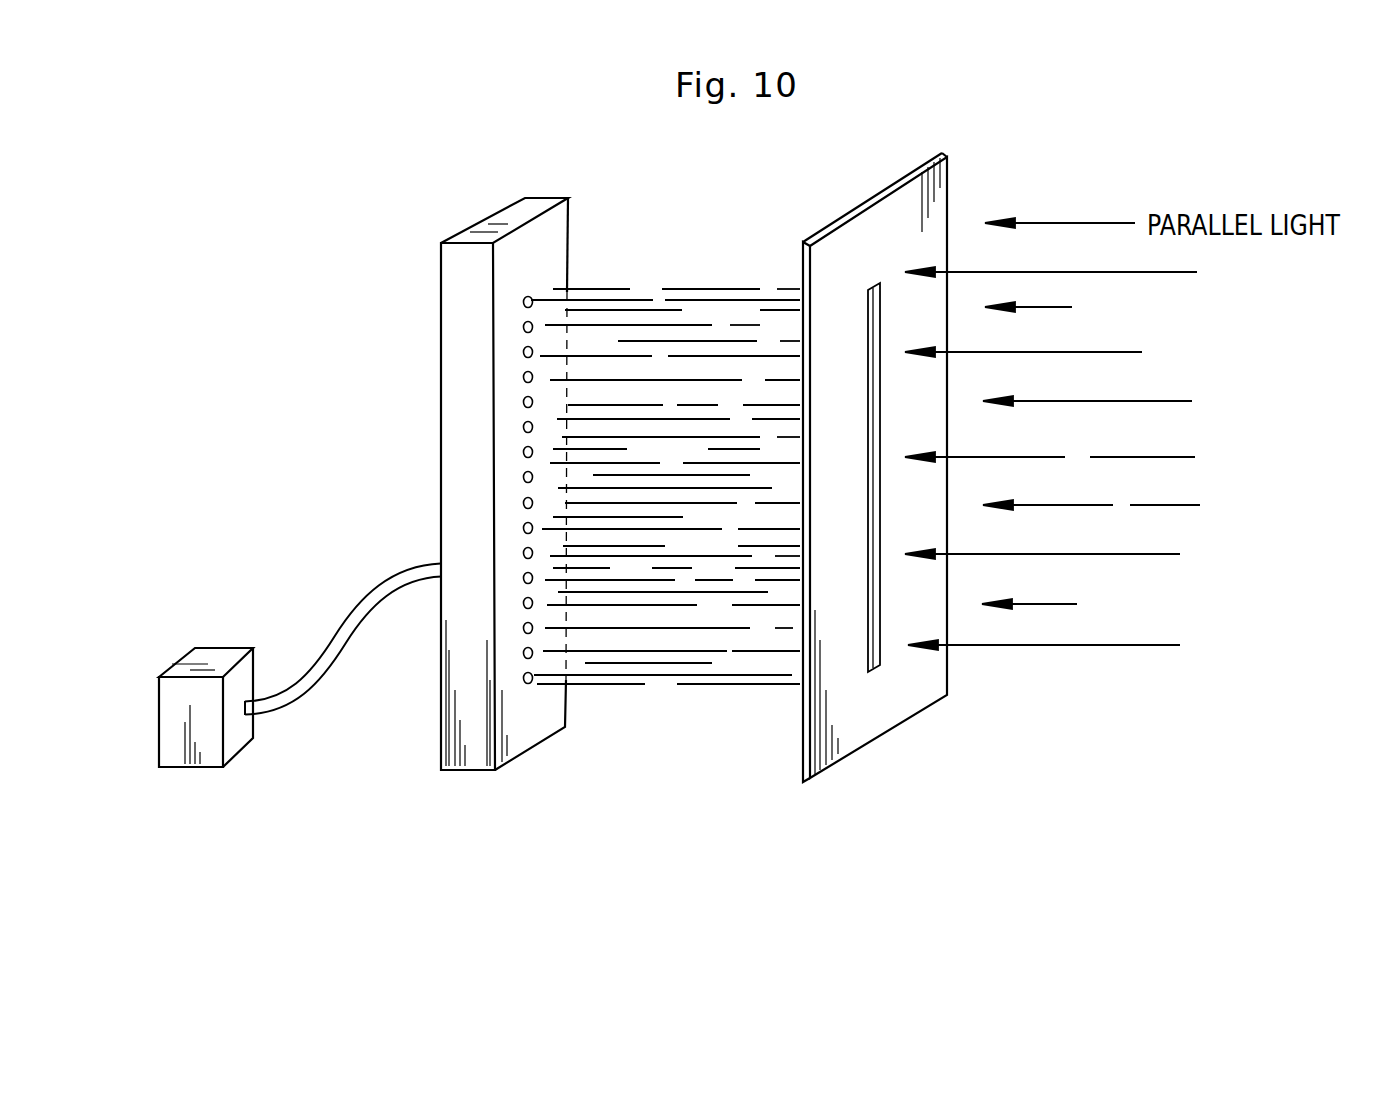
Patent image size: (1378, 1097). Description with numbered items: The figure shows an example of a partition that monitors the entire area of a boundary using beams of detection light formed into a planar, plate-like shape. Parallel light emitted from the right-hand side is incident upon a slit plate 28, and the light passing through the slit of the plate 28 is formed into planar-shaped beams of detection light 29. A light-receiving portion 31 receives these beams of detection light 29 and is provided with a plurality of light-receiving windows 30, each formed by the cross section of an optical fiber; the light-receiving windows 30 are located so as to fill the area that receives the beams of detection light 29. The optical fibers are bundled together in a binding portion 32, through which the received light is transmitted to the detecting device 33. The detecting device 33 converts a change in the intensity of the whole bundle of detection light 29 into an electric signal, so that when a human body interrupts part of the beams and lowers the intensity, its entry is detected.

The slit plate 28 is at (880, 218).
The beams of detection light 29 is at (688, 325).
The light-receiving windows 30 is at (531, 298).
The light-receiving portion 31 is at (532, 207).
The binding portion 32 is at (332, 635).
The detecting device 33 is at (228, 658).